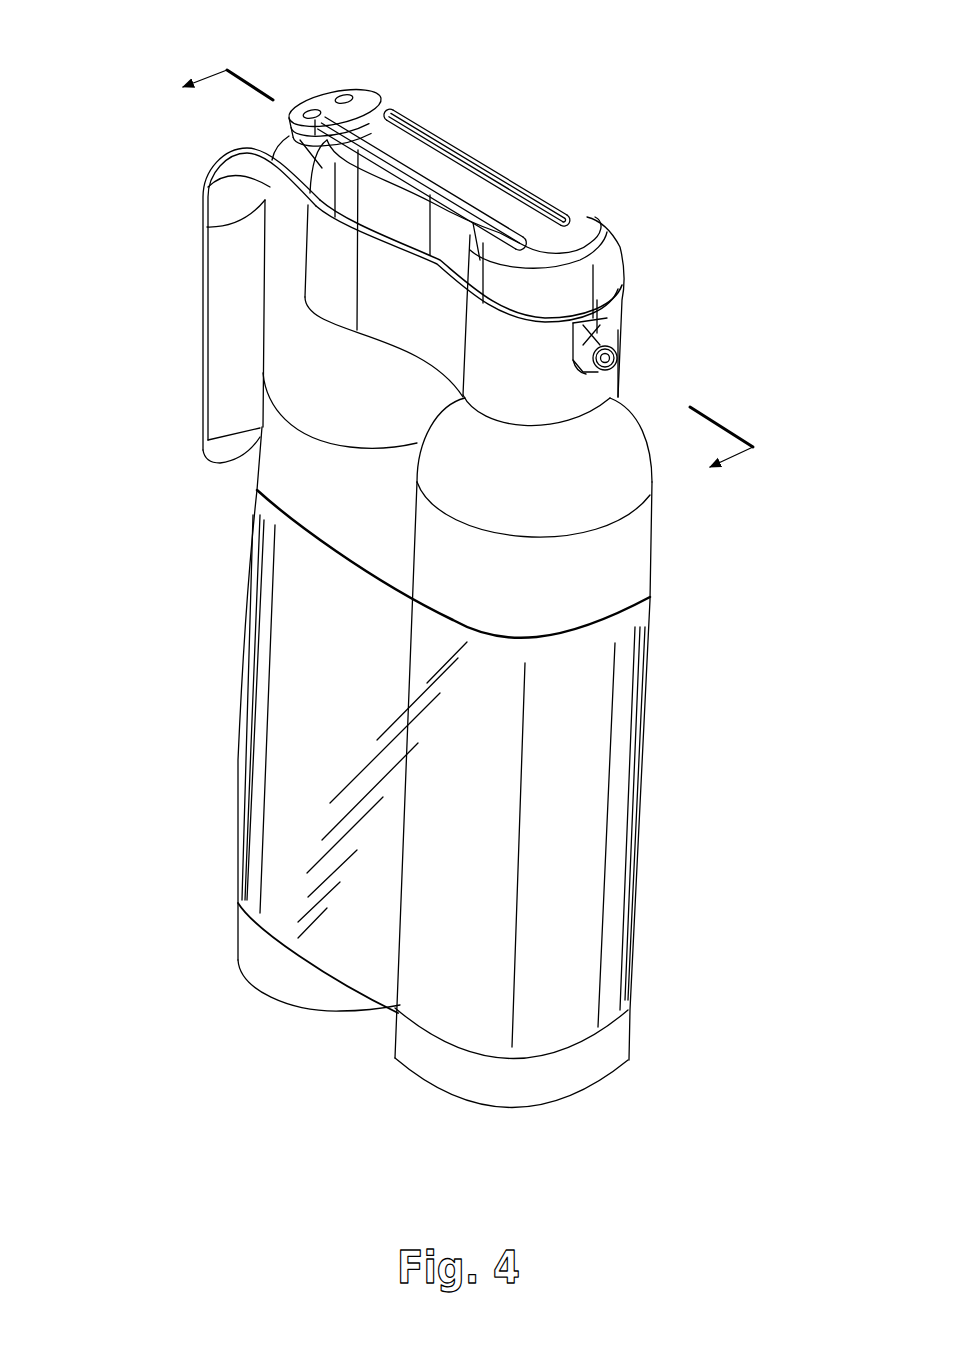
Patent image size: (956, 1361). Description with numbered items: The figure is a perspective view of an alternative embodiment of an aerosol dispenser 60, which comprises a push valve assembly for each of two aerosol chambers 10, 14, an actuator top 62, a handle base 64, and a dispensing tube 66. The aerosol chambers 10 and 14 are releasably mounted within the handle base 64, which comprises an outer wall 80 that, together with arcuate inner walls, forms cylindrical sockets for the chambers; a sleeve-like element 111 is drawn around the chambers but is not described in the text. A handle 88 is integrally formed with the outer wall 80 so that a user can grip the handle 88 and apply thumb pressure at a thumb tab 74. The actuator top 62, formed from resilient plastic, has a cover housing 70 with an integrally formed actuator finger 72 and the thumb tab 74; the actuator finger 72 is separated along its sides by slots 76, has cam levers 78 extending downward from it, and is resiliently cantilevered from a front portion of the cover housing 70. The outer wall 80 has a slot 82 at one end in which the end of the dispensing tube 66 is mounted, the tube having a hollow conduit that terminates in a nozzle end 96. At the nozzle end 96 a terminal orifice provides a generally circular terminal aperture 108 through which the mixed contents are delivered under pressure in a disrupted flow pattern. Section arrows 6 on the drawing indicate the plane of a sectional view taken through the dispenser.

The aerosol chamber 10 is at (618, 482).
The sleeve 111 is at (345, 560).
The aerosol chamber 14 is at (303, 388).
The handle 88 is at (220, 275).
The aerosol dispenser 60 is at (633, 313).
The cover housing 70 is at (587, 290).
The actuator top 62 is at (577, 237).
The thumb tab 74 is at (323, 102).
The actuator finger 72 is at (423, 155).
The slots 76 is at (543, 218).
The cam levers 78 is at (497, 233).
The outer wall 80 is at (563, 415).
The handle base 64 is at (597, 395).
The dispensing tube 66 is at (590, 316).
The slot 82 is at (587, 372).
The nozzle end 96 is at (617, 352).
The terminal aperture 108 is at (617, 358).
The section line 6- 6 is at (456, 285).